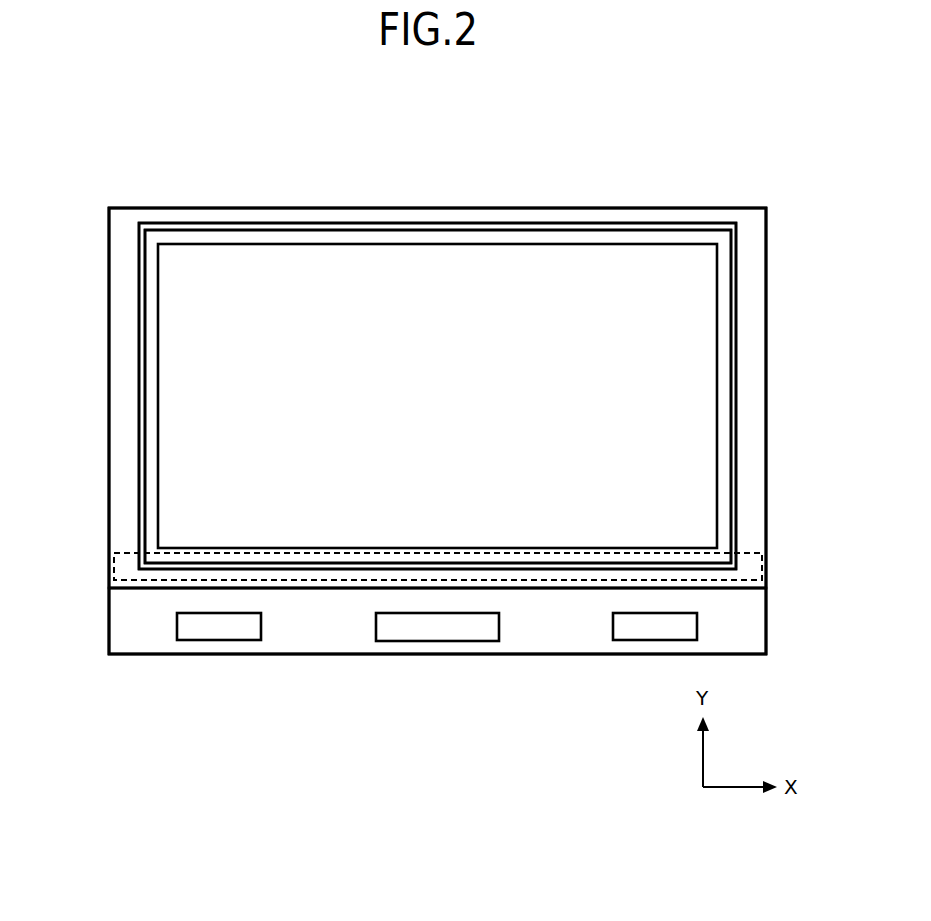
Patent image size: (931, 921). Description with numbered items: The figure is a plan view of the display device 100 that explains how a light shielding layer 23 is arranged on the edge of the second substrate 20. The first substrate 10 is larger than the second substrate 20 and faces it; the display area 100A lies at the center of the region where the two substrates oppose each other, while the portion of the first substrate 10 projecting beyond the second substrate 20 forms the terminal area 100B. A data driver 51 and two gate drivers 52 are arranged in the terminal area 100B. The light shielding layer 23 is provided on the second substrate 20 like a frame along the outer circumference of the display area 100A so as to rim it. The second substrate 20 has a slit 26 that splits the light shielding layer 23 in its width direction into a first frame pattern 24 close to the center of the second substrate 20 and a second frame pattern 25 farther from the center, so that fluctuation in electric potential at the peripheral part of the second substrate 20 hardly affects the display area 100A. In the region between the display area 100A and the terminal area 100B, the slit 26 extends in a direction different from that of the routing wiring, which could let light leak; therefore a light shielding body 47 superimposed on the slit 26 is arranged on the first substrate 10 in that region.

The display device 100 is at (728, 149).
The display area 100A is at (499, 280).
The terminal area 100B is at (102, 590).
The first substrate 10 is at (766, 620).
The second substrate 20 is at (766, 334).
The light shielding layer 23 is at (67, 453).
The first frame pattern 24 is at (152, 465).
The second frame pattern 25 is at (123, 494).
The slit 26 is at (142, 333).
The light shielding body 47 is at (273, 583).
The data driver 51 is at (436, 641).
The gate drivers 52 is at (220, 640).